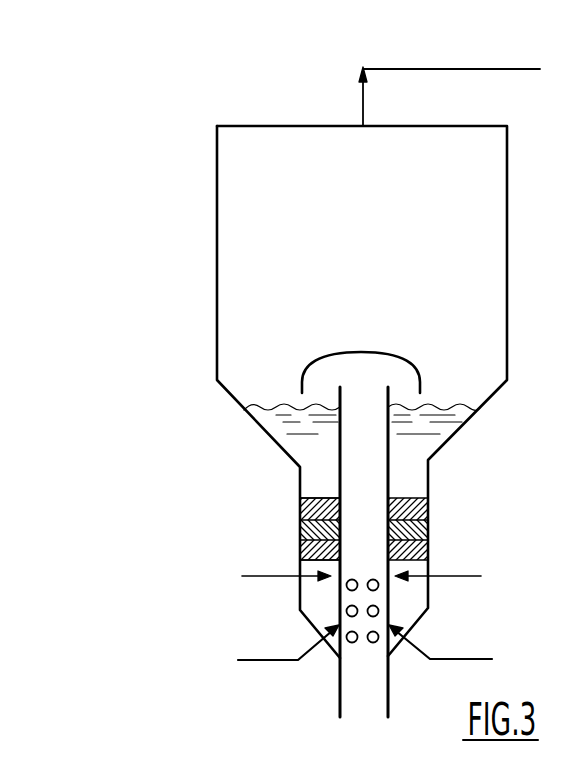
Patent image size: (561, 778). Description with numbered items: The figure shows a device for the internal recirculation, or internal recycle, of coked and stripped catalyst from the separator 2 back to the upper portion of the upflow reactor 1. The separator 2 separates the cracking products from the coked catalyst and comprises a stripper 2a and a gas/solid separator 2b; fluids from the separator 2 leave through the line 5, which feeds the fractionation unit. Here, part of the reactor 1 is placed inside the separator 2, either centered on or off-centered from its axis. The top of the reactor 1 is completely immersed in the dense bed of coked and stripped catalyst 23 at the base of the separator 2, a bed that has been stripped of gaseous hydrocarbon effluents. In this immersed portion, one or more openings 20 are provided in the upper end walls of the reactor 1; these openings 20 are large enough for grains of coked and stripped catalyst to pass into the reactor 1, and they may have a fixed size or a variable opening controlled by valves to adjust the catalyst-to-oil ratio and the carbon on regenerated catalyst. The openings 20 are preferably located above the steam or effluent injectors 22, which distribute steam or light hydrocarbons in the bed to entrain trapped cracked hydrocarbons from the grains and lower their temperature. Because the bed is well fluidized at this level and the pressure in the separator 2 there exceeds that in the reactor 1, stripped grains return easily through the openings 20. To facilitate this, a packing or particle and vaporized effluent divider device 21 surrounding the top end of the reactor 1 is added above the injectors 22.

The upflow reactor 1 is at (338, 668).
The separator 2 is at (508, 290).
The stripper 2a is at (300, 533).
The gas/solid separator 2b is at (333, 352).
The line 5 is at (438, 70).
The openings 20 is at (378, 612).
The packing or particle and vaporized effluent divider device 21 is at (428, 527).
The steam or effluent injectors 22 is at (450, 576).
The dense bed of coked and stripped catalyst 23 is at (316, 608).